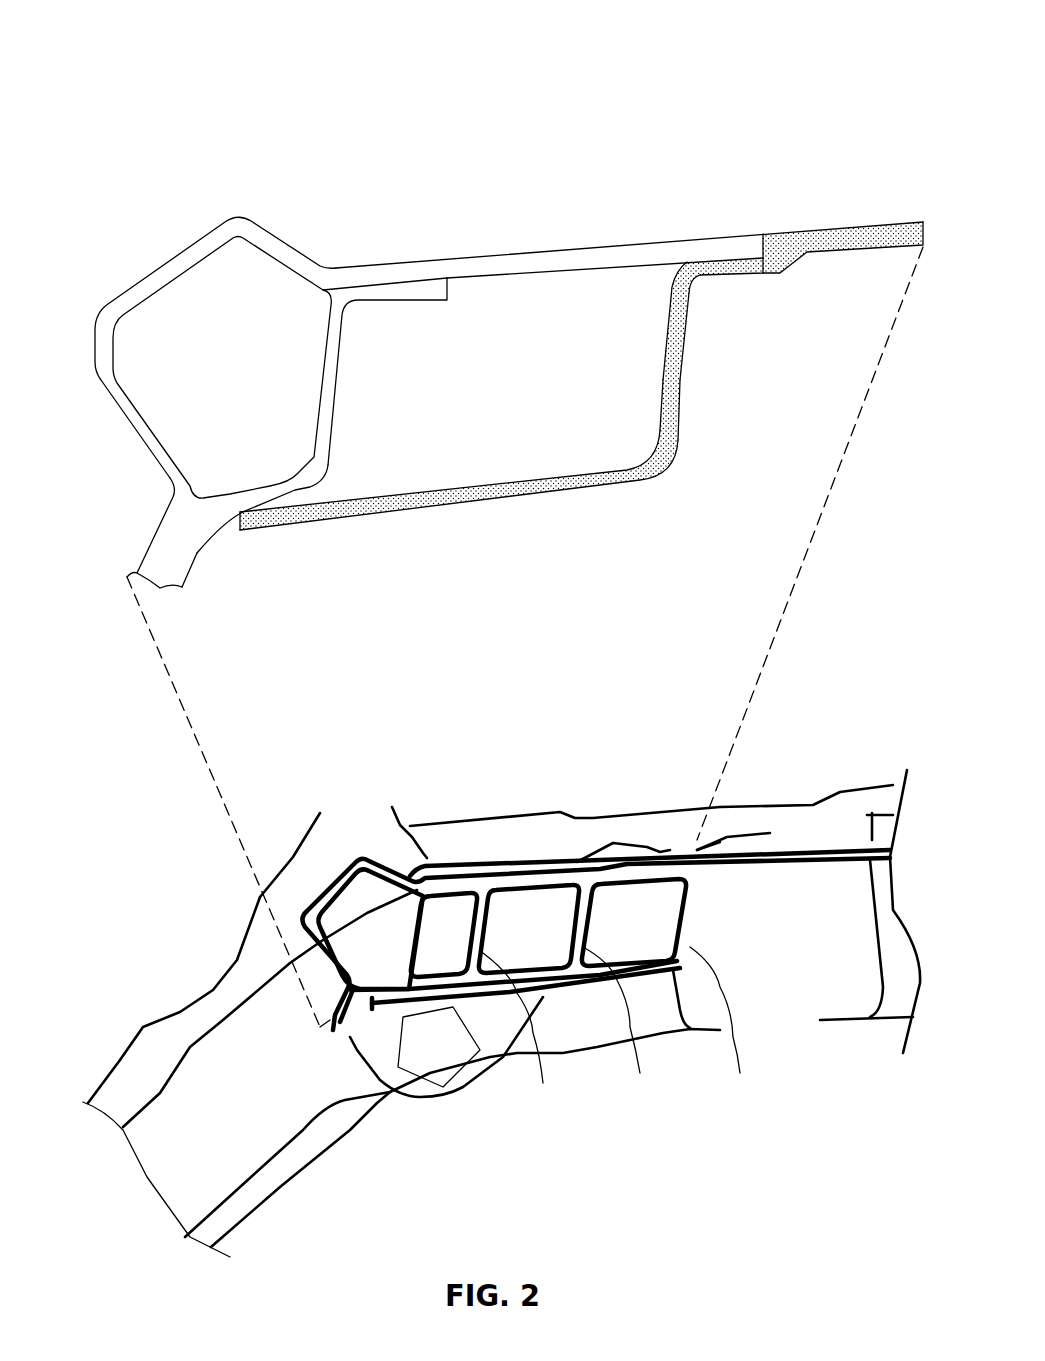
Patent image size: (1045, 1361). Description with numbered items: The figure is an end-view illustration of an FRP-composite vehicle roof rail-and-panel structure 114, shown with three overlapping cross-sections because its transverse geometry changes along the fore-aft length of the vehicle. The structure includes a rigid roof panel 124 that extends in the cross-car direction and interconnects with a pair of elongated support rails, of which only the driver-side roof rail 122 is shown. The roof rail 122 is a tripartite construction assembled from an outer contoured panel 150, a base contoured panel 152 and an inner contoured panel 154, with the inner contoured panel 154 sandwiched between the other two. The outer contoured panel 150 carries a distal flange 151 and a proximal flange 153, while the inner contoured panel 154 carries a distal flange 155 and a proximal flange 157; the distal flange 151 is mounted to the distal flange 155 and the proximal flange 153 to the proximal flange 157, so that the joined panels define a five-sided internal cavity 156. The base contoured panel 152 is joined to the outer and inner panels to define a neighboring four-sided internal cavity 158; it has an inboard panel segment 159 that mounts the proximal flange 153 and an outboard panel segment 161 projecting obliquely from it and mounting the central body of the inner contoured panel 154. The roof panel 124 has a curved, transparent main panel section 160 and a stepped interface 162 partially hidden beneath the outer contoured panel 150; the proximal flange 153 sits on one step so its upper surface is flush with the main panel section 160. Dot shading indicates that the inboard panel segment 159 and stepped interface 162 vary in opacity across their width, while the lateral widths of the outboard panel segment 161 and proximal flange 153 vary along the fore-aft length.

The FRP-composite vehicle roof rail-and-panel structure 114 is at (177, 757).
The roof rail 122 is at (197, 160).
The roof panel 124 is at (878, 110).
The outer contoured panel 150 is at (178, 242).
The distal flange 151 is at (147, 547).
The base contoured panel 152 is at (657, 472).
The proximal flange 153 is at (440, 263).
The inner contoured panel 154 is at (320, 488).
The distal flange 155 is at (188, 565).
The internal cavity 156 is at (152, 320).
The proximal flange 157 is at (378, 283).
The internal cavity 158 is at (523, 280).
The inboard panel segment 159 is at (763, 273).
The main panel section 160 is at (922, 222).
The outboard panel segment 161 is at (445, 508).
The stepped interface 162 is at (767, 272).